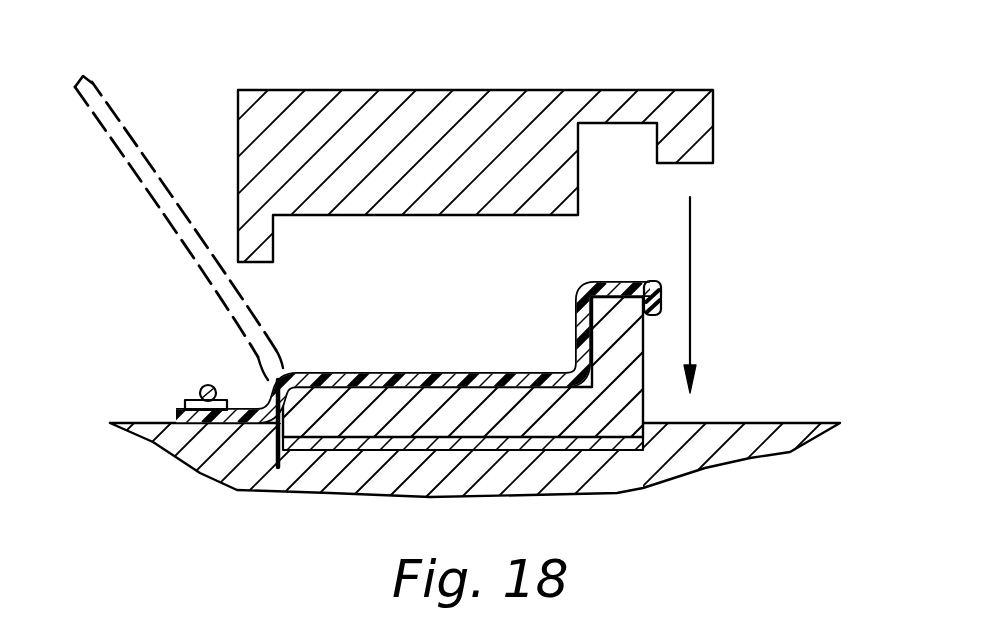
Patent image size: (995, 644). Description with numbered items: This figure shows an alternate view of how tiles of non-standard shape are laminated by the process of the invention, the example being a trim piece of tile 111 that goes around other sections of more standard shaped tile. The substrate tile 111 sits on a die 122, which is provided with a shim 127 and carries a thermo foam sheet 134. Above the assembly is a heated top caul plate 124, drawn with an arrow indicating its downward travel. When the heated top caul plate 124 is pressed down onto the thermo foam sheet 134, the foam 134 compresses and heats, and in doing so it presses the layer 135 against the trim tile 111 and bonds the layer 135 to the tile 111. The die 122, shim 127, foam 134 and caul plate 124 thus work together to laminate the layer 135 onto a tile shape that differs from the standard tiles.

The heated top caul plate 124 is at (537, 95).
The thermo foam sheet 134 is at (611, 283).
The layer 135 is at (660, 297).
The substrate tile 111 is at (633, 382).
The die 122 is at (787, 428).
The shim 127 is at (573, 443).